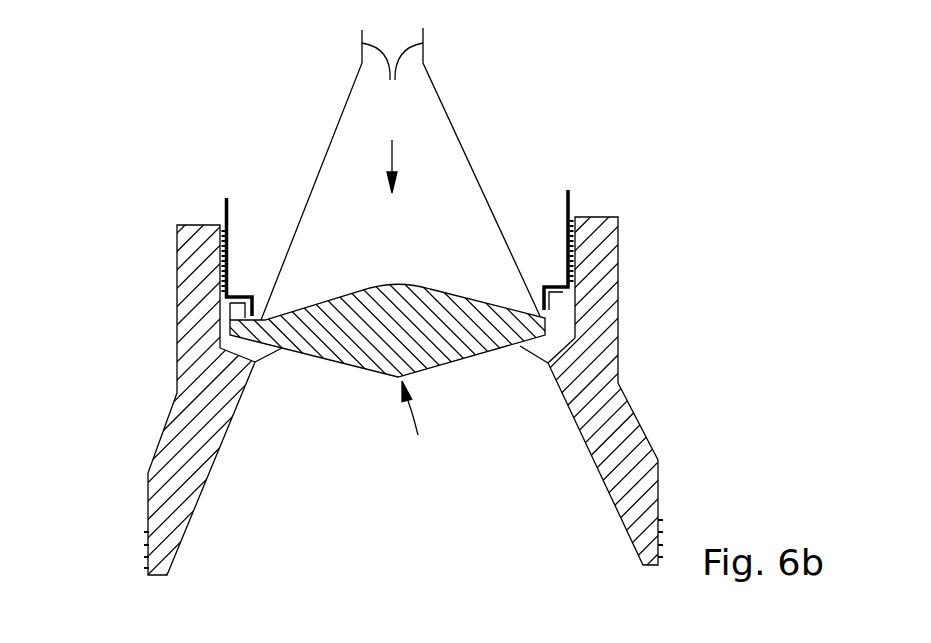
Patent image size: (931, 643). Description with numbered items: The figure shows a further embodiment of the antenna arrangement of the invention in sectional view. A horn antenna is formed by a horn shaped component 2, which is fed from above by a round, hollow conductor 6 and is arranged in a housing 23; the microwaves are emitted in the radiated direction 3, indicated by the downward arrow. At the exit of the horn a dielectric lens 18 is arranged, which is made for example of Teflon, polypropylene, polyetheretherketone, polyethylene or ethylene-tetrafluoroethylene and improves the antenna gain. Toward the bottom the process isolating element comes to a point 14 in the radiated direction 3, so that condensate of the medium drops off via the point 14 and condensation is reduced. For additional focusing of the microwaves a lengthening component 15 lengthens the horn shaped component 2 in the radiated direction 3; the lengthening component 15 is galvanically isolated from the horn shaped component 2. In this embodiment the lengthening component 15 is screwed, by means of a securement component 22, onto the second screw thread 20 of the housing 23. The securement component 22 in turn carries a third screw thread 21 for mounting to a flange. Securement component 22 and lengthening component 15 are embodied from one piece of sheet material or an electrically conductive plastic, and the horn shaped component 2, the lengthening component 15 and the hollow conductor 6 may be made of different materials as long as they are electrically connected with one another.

The horn shaped component 2 is at (448, 118).
The radiated direction 3 is at (392, 160).
The round, hollow conductor 6 is at (392, 76).
The point 14 is at (416, 424).
The lengthening component 15 is at (201, 493).
The dielectric lens 18 is at (363, 303).
The second screw thread 20 is at (219, 242).
The third screw thread 21 is at (148, 543).
The securement component 22 is at (183, 281).
The housing 23 is at (224, 208).